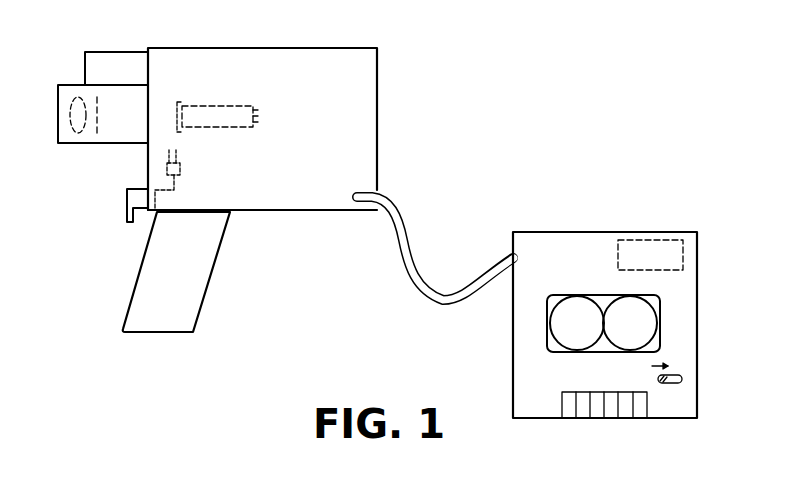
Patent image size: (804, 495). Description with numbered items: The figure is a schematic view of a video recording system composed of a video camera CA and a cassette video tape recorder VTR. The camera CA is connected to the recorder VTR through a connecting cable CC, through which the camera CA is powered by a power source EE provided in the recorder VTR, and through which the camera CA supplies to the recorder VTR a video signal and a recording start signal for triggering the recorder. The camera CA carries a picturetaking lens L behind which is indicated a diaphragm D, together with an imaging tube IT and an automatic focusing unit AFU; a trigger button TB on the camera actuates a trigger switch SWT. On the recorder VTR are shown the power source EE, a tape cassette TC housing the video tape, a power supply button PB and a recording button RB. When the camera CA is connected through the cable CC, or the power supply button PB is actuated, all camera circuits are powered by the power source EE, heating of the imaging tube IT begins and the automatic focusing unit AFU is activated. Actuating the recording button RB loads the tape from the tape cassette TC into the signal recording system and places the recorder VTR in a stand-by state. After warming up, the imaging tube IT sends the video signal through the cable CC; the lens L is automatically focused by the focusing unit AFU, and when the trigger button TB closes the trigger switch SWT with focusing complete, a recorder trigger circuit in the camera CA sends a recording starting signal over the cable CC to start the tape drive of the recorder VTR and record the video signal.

The video camera CA is at (358, 19).
The automatic focusing unit AFU is at (108, 58).
The picturetaking lens L is at (73, 118).
The diaphragm D is at (97, 134).
The imaging tube IT is at (223, 106).
The trigger switch SWT is at (180, 168).
The trigger button TB is at (127, 204).
The connecting cable CC is at (413, 292).
The video tape recorder VTR is at (675, 210).
The power source EE is at (683, 256).
The tape cassette TC is at (650, 322).
The power supply button PB is at (660, 385).
The recording button RB is at (568, 413).